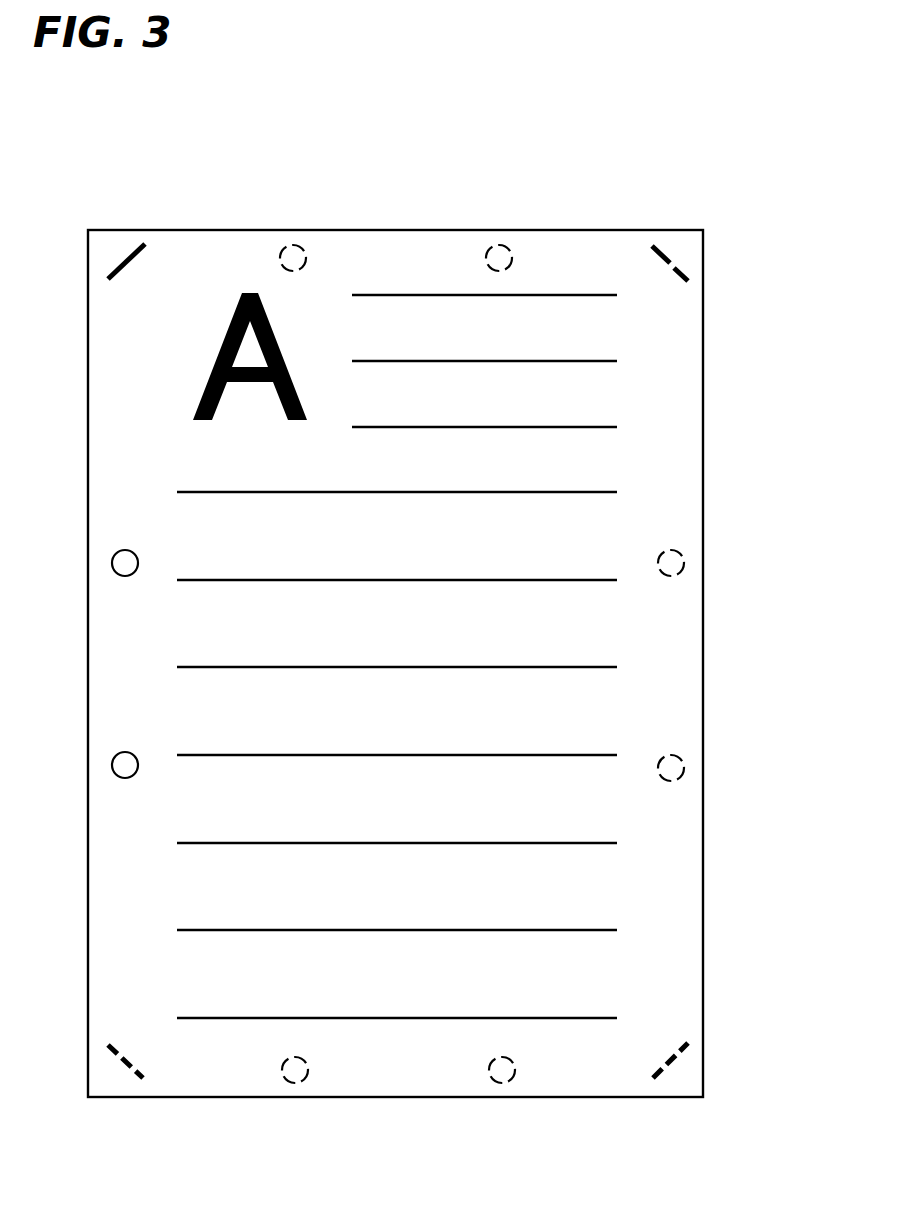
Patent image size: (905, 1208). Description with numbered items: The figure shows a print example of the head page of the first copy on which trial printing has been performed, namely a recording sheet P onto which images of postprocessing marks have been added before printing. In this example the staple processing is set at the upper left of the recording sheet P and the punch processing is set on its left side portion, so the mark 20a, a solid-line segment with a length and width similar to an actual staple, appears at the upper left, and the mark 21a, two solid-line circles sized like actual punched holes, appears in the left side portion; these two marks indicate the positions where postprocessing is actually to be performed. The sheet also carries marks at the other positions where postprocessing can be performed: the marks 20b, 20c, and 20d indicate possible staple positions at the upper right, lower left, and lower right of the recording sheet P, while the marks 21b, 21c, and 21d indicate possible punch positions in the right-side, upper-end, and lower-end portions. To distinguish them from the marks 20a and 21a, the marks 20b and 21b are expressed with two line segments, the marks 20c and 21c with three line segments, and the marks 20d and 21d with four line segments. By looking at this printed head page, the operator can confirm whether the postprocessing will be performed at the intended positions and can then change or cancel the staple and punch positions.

The recording sheet P is at (544, 230).
The mark indicating staple processing position 20a is at (117, 256).
The mark indicating position where staple processing can be performed 20b is at (676, 255).
The mark indicating position where staple processing can be performed 20c is at (122, 1068).
The mark indicating position where staple processing can be performed 20d is at (678, 1068).
The mark indicating punch processing position 21a is at (109, 570).
The mark indicating position where punch processing can be performed 21b is at (684, 573).
The mark indicating position where punch processing can be performed 21c is at (491, 245).
The mark indicating position where punch processing can be performed 21d is at (494, 1083).